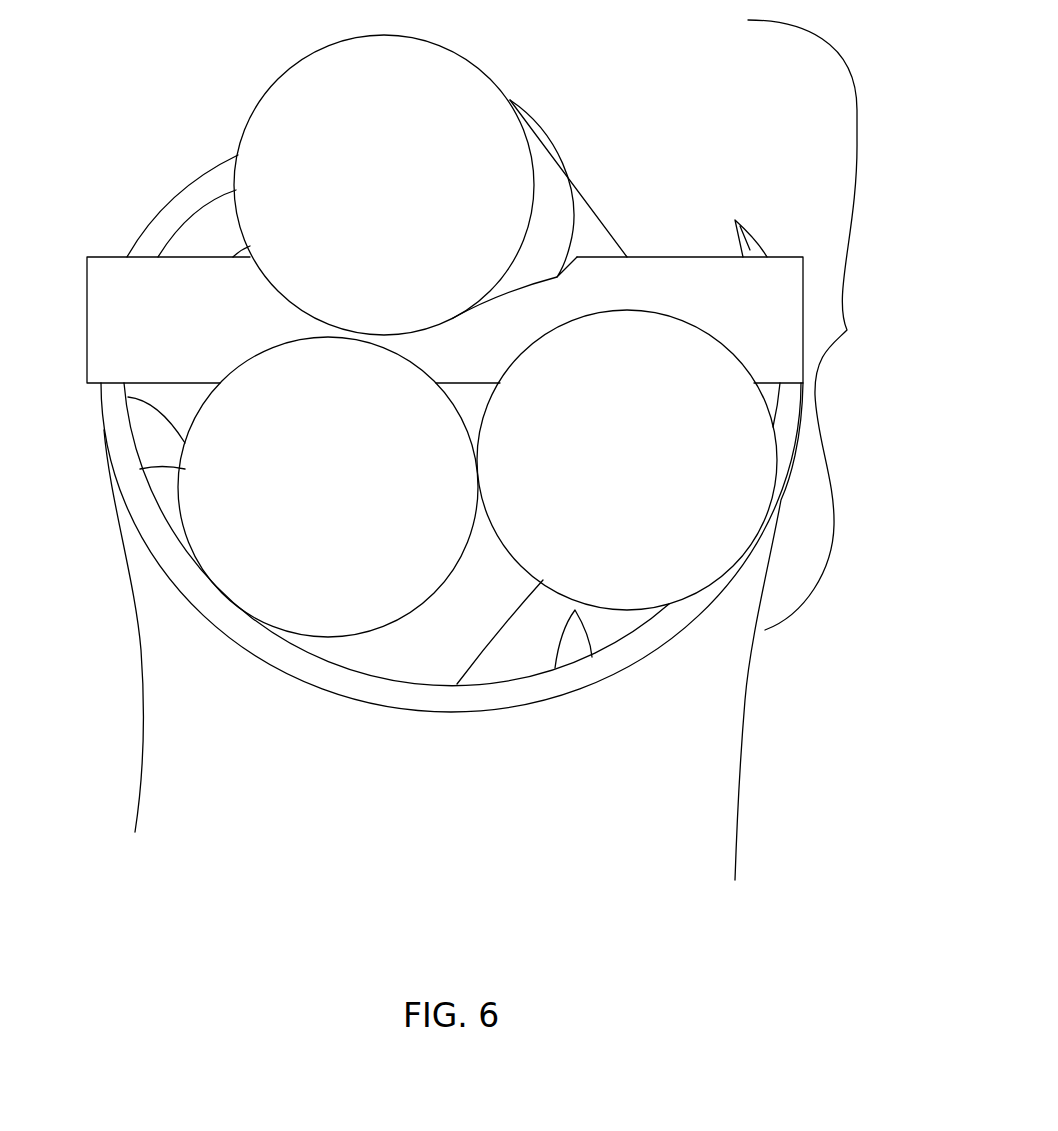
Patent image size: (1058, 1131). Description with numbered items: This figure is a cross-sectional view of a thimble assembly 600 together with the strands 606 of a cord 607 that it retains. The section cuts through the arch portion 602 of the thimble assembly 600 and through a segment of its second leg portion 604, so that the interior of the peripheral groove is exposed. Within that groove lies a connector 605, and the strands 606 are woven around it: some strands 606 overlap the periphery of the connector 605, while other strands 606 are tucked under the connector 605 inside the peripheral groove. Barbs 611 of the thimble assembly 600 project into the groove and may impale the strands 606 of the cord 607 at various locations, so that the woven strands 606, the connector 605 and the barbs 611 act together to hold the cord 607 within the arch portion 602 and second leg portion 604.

The thimble assembly 600 is at (115, 93).
The arch portion 602 is at (318, 678).
The second leg portion 604 is at (460, 811).
The connector 605 is at (723, 307).
The strands 606 is at (405, 199).
The cord 607 is at (827, 325).
The barbs 611 is at (735, 220).